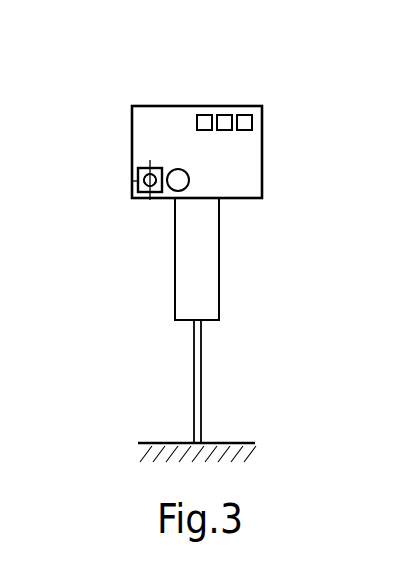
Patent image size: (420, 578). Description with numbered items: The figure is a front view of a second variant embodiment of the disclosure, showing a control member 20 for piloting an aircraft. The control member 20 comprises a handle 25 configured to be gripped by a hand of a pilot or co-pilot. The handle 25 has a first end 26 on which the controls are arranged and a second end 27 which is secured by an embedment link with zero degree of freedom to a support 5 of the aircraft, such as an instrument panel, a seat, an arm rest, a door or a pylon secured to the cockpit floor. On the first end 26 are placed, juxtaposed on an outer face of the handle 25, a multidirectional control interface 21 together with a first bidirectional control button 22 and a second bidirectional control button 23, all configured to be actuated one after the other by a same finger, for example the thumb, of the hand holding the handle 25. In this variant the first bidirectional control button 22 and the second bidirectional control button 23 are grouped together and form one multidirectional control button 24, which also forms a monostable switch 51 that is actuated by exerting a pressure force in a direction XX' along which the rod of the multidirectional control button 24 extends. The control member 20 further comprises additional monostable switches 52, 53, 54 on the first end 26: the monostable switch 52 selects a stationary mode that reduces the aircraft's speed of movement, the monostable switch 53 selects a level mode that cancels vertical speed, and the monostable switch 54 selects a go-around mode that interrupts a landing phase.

The support 5 is at (165, 443).
The control member 20 is at (290, 320).
The multidirectional control interface 21 is at (190, 180).
The first bidirectional control button 22 is at (132, 183).
The second bidirectional control button 23 is at (132, 168).
The multidirectional control button 24 is at (157, 200).
The monostable switch 51 is at (150, 180).
The handle 25 is at (219, 261).
The first end 26 is at (287, 163).
The second end 27 is at (213, 430).
The monostable switch 52 is at (205, 107).
The monostable switch 53 is at (225, 107).
The monostable switch 54 is at (252, 121).
The direction XX' is at (157, 118).